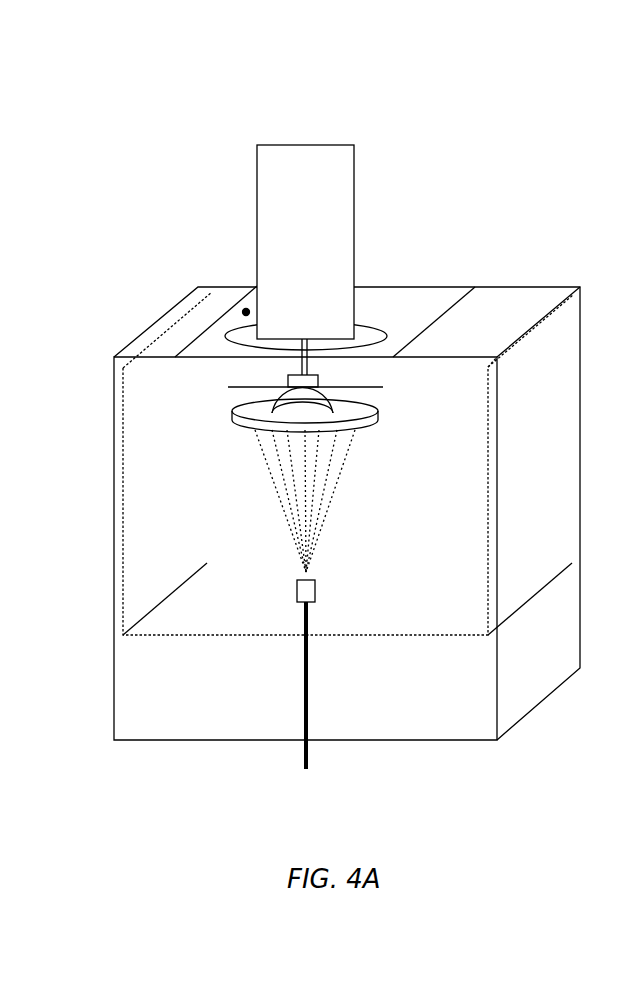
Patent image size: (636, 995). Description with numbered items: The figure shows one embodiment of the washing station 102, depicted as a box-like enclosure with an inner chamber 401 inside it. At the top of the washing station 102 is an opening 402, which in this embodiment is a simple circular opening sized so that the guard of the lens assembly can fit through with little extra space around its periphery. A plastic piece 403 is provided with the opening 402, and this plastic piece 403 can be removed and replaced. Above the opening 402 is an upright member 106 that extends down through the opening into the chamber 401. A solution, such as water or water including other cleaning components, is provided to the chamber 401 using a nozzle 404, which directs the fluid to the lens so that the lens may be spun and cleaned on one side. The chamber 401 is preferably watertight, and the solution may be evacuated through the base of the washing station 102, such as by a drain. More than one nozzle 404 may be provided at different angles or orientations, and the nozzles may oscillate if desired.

The washing station 102 is at (158, 757).
The light source 106 is at (292, 123).
The chamber 401 is at (457, 639).
The opening 402 is at (375, 322).
The plastic piece 403 is at (242, 311).
The nozzle 404 is at (282, 590).